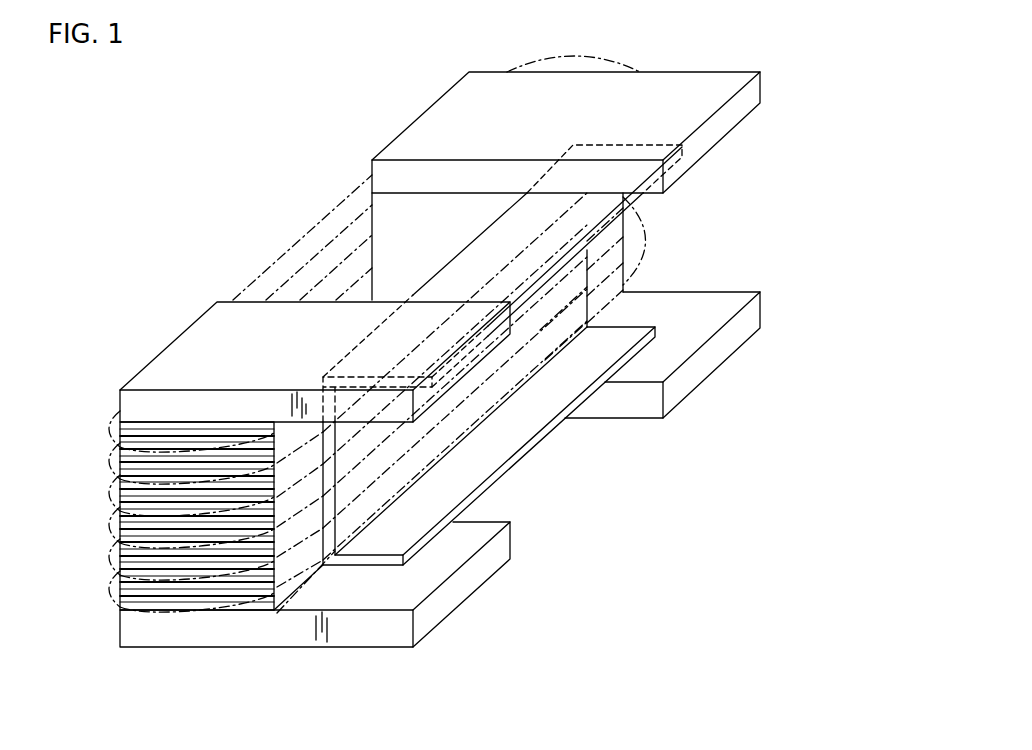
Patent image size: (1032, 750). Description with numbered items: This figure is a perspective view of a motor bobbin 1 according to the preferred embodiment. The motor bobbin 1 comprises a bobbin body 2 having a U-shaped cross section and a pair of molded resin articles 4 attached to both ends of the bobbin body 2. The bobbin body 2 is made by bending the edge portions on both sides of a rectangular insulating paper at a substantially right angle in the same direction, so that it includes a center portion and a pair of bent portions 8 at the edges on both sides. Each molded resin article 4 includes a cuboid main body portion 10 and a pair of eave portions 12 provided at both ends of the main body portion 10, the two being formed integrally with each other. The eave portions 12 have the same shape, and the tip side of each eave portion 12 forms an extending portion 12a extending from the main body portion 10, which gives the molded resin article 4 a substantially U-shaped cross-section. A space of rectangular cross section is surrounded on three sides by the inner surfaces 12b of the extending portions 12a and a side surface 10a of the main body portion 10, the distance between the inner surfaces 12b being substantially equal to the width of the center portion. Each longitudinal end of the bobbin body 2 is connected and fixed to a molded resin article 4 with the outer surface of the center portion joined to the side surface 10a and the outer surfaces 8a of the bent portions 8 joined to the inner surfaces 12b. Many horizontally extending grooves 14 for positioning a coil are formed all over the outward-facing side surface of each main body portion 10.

The motor bobbin 1 is at (150, 178).
The bobbin body 2 is at (513, 442).
The molded resin article 4 is at (188, 358).
The bent portion 8 is at (470, 482).
The outer surface of bent portion 8a is at (460, 268).
The main body portion 10 is at (130, 497).
The side surface of main body portion 10a is at (297, 570).
The eave portion 12 is at (150, 628).
The extending portion 12a is at (390, 628).
The inner surface of extending portion 12b is at (430, 568).
The groove 14 is at (128, 590).